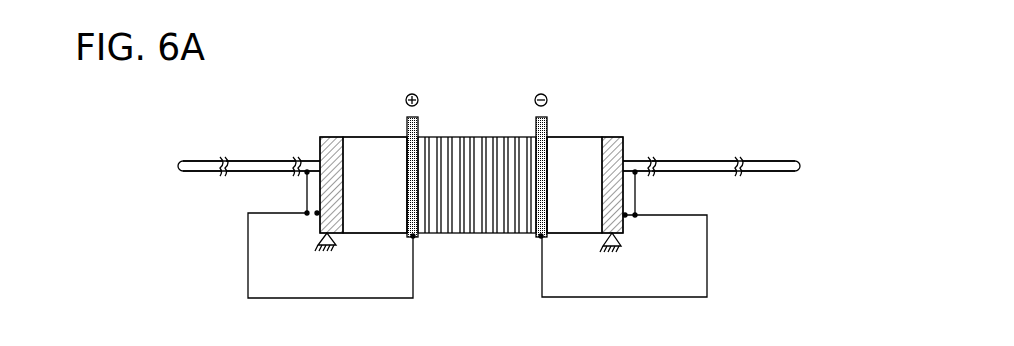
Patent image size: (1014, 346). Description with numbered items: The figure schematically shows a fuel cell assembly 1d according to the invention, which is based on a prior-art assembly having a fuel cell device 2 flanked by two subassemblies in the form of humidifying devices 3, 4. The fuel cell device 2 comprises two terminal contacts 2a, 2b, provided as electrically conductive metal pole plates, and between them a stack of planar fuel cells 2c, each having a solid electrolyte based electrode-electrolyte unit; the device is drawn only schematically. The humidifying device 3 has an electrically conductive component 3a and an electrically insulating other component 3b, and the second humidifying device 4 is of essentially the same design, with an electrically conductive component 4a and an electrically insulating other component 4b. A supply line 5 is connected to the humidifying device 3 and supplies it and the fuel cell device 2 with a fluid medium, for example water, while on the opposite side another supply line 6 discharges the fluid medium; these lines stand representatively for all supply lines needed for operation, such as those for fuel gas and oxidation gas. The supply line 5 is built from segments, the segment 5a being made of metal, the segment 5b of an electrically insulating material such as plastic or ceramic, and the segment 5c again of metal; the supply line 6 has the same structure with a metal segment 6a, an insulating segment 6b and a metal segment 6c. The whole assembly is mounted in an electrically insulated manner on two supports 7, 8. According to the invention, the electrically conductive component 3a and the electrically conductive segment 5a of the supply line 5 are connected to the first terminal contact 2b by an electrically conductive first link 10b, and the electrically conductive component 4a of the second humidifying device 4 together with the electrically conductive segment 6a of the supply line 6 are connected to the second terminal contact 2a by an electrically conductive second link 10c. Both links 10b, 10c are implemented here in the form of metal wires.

The fuel cell assembly 1d is at (634, 116).
The fuel cell device 2 is at (491, 178).
The second terminal contact 2a is at (420, 116).
The first terminal contact 2b is at (549, 117).
The stack of planar fuel cells 2c is at (490, 225).
The humidifying device 3 is at (567, 235).
The electrically conductive component 3a is at (617, 137).
The electrically insulating other component 3b is at (578, 145).
The second humidifying device 4 is at (375, 237).
The electrically conductive component 4a is at (333, 137).
The electrically insulating other component 4b is at (370, 143).
The supply line 5 is at (705, 175).
The segment 5a is at (635, 162).
The segment 5b is at (700, 162).
The segment 5c is at (755, 172).
The supply line 6 is at (233, 173).
The segment 6a is at (305, 158).
The segment 6b is at (258, 160).
The segment 6c is at (197, 172).
The support 7 is at (622, 246).
The support 8 is at (317, 246).
The electrically conductive first link 10b is at (707, 275).
The electrically conductive second link 10c is at (248, 277).